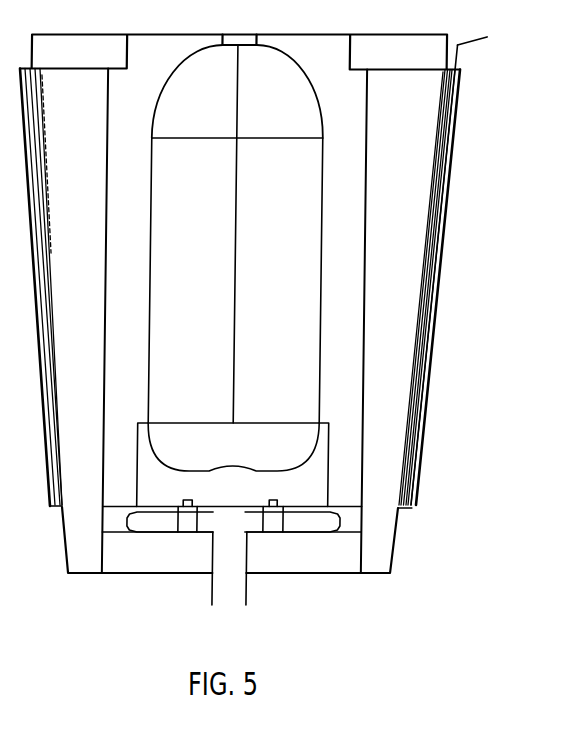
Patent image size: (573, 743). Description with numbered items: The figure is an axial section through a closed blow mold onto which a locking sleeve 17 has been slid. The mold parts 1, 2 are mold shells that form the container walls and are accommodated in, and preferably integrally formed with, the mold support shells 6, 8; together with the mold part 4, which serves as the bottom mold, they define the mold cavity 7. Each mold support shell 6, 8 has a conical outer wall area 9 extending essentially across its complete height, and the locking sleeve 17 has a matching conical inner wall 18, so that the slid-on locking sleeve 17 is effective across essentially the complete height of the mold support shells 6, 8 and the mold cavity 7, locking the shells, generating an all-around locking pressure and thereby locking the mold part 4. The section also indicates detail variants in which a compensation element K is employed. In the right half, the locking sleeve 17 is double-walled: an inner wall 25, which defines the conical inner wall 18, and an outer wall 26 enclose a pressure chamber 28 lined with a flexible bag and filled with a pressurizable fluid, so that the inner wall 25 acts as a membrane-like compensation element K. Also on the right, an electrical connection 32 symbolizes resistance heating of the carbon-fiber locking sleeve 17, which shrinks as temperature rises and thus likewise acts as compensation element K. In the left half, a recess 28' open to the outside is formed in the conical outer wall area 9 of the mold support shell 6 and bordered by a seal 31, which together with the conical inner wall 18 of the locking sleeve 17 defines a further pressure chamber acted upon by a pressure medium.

The mold part 1 is at (174, 76).
The mold part 2 is at (311, 76).
The mold part 4 is at (316, 470).
The mold support shell 6 is at (103, 100).
The mold cavity 7 is at (281, 258).
The mold support shell 8 is at (377, 160).
The conical outer wall area 9 is at (53, 238).
The locking sleeve 17 is at (446, 273).
The conical inner wall 18 is at (451, 145).
The inner wall 25 is at (448, 170).
The outer wall 26 is at (441, 232).
The pressure chamber 28 is at (454, 288).
The recess 28' is at (66, 164).
The seal 31 is at (44, 104).
The electrical connection 32 is at (488, 37).
The compensation element K is at (50, 187).